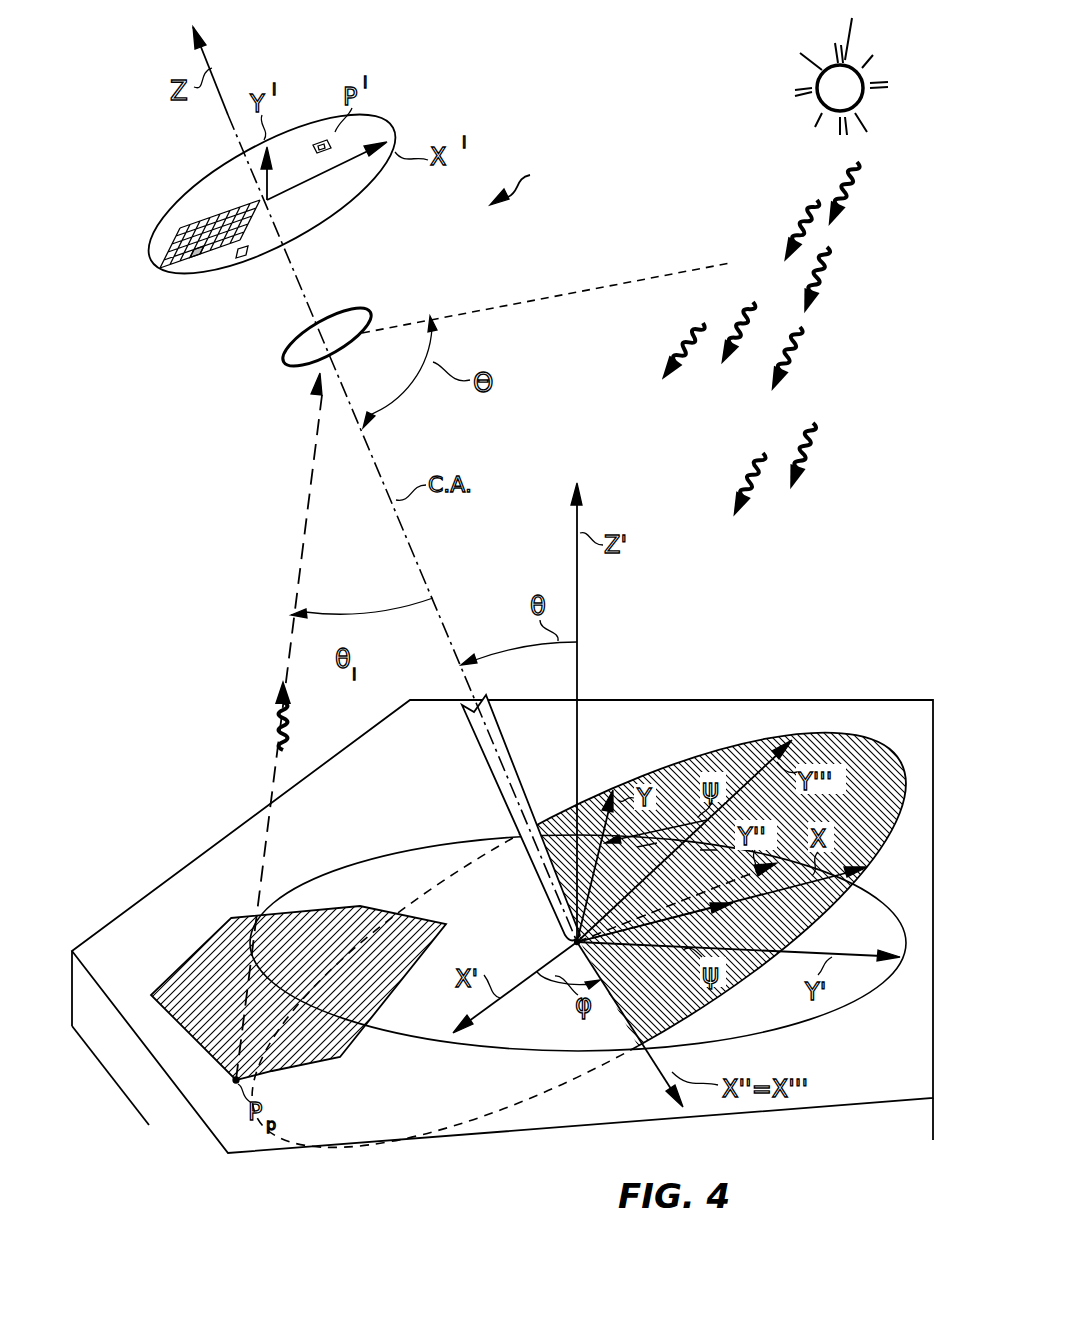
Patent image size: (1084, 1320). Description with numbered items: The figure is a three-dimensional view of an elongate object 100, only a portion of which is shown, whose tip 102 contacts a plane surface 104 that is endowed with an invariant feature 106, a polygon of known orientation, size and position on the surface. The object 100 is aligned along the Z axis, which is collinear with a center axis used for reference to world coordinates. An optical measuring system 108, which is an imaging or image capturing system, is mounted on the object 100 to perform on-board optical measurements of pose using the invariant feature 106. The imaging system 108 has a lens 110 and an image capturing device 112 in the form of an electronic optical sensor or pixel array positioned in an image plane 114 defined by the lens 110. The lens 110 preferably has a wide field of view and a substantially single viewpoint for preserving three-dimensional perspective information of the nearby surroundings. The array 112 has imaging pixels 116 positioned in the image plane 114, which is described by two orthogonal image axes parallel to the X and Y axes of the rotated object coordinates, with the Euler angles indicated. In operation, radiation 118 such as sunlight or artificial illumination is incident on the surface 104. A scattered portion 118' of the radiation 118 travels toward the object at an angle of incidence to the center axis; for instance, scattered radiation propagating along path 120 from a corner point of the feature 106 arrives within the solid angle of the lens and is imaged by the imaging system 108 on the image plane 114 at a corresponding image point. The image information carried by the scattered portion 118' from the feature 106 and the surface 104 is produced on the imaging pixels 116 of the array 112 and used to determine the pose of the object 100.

The elongate object 100 is at (500, 797).
The tip 102 is at (570, 940).
The plane surface 104 is at (712, 710).
The invariant feature 106 is at (178, 975).
The optical measuring system 108 is at (534, 180).
The lens 110 is at (300, 358).
The image capturing device 112 is at (178, 214).
The image plane 114 is at (150, 268).
The imaging pixels 116 is at (190, 276).
The radiation 118 is at (771, 339).
The scattered portion 118' is at (237, 715).
The path 120 is at (265, 778).